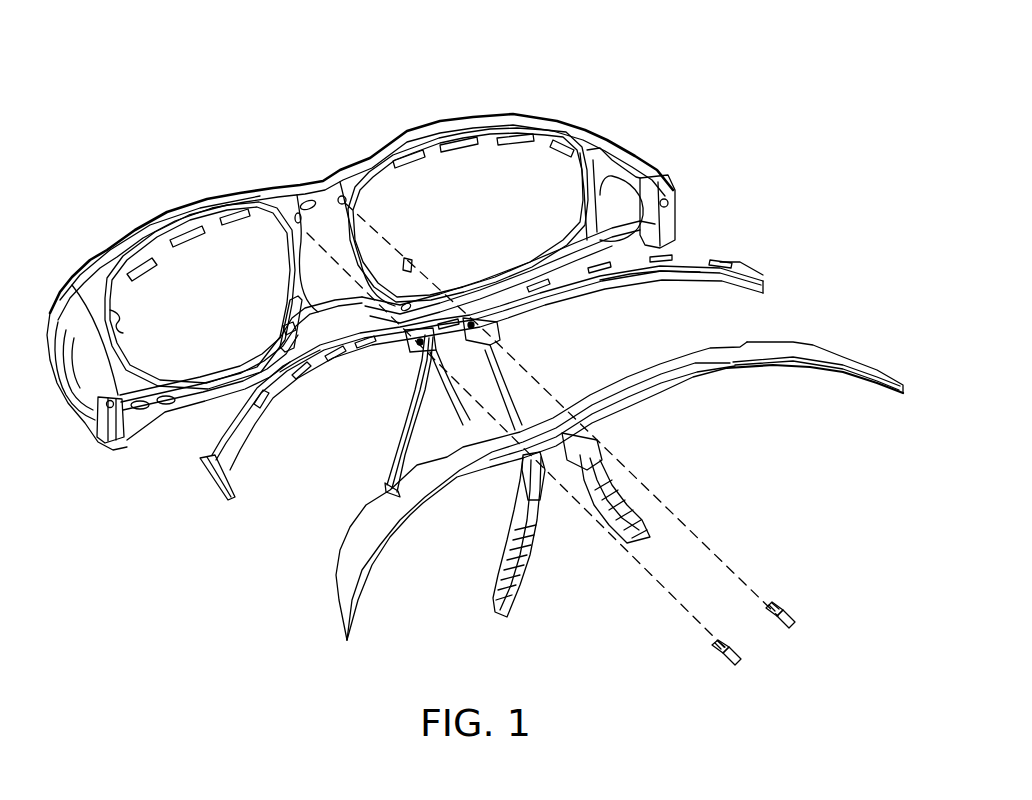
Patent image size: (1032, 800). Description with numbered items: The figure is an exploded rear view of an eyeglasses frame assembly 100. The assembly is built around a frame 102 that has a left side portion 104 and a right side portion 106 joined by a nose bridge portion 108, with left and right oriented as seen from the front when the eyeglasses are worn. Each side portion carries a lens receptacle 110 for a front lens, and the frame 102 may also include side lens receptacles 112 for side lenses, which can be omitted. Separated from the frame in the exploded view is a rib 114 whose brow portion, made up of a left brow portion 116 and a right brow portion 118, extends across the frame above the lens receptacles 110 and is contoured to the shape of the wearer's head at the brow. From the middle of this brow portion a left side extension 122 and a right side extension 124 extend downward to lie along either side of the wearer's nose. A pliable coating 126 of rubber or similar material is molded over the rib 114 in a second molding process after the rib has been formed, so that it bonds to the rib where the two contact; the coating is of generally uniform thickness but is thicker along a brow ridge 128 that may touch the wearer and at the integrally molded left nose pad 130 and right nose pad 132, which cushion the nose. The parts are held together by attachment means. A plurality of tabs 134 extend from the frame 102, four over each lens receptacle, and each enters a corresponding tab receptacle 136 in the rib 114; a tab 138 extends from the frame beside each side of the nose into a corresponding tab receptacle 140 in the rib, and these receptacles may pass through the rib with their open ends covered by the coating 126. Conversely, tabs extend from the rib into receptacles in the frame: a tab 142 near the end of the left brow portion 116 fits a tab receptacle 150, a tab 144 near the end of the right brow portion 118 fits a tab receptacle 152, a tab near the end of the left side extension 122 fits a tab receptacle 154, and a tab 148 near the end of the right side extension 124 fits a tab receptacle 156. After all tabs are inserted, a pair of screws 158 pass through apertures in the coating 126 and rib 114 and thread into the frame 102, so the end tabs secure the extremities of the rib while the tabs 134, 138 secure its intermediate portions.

The eyeglasses frame assembly 100 is at (723, 76).
The frame 102 is at (660, 50).
The left side portion 104 is at (452, 118).
The right side portion 106 is at (165, 215).
The nose bridge portion 108 is at (318, 188).
The lens receptacles 110 is at (236, 339).
The side lens receptacles 112 is at (70, 412).
The rib 114 is at (777, 198).
The left brow portion 116 is at (632, 290).
The right brow portion 118 is at (300, 385).
The left side extension 122 is at (512, 345).
The right side extension 124 is at (400, 430).
The pliable coating 126 is at (799, 330).
The brow ridge 128 is at (760, 378).
The left nose pad 130 is at (600, 455).
The right nose pad 132 is at (530, 552).
The tabs 134 is at (133, 295).
The tab receptacles 136 is at (265, 412).
The tab 138 is at (300, 304).
The tab receptacle 140 is at (488, 412).
The tab 142 is at (732, 262).
The tab 144 is at (205, 458).
The tab 148 is at (384, 484).
The tab receptacle 150 is at (596, 158).
The tab receptacle 152 is at (122, 316).
The tab receptacle 154 is at (402, 306).
The tab receptacle 156 is at (292, 350).
The screws 158 is at (795, 616).